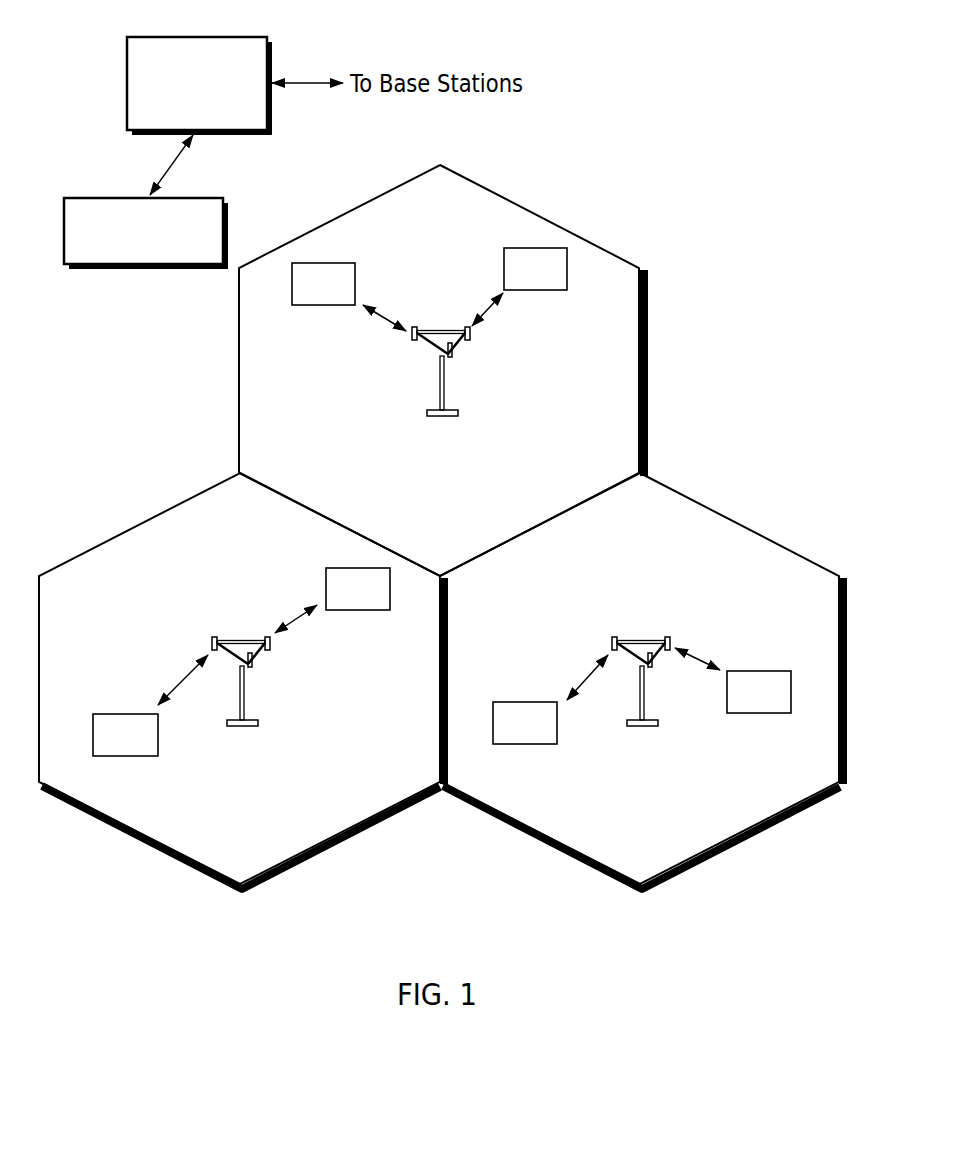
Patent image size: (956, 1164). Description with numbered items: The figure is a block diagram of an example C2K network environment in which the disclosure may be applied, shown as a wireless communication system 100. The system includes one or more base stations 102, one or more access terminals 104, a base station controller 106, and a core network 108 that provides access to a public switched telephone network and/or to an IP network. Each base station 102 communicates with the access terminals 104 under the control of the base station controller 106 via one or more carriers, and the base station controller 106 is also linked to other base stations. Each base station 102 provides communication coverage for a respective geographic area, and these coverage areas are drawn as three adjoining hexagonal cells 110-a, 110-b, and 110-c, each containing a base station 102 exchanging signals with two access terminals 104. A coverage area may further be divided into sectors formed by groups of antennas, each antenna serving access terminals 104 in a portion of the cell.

The wireless communication system 100 is at (750, 195).
The base station 102 is at (443, 330).
The access terminal 104 is at (313, 306).
The base station controller 106 is at (157, 36).
The core network 108 is at (108, 197).
The cell 110-a is at (127, 531).
The cell 110-b is at (523, 208).
The cell 110-c is at (738, 524).